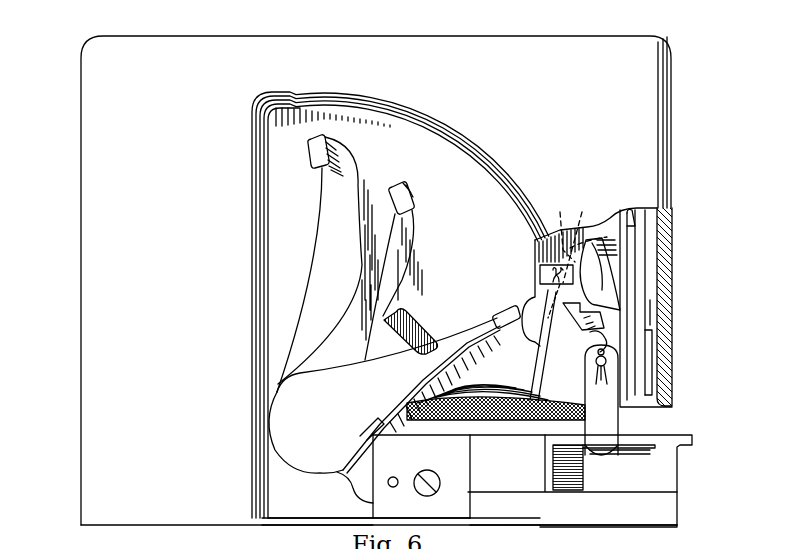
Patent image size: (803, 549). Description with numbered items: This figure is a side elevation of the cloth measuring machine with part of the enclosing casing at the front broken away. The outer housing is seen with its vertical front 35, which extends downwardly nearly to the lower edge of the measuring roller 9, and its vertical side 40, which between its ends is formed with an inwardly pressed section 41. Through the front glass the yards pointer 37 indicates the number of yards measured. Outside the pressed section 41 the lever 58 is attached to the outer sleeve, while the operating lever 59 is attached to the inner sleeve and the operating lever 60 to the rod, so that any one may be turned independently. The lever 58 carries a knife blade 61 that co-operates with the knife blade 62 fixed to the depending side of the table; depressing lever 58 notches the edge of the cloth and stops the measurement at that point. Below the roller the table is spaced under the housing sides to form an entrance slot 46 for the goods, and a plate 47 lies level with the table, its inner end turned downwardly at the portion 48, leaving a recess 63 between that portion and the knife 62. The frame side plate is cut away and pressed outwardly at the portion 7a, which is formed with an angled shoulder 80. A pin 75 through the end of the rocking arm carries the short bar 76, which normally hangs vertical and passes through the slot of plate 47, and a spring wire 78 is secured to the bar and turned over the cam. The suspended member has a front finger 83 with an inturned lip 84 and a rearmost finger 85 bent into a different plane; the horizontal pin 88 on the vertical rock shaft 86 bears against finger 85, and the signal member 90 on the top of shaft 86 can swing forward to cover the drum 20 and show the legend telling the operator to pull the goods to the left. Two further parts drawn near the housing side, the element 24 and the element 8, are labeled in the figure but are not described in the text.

The side 40 is at (100, 388).
The inwardly pressed section 41 is at (420, 158).
The lever 58 is at (328, 245).
The operating lever 59 is at (387, 262).
The operating lever 60 is at (450, 347).
The knife blade 61 is at (392, 417).
The knife blade 62 is at (447, 452).
The measuring roller 9 is at (488, 400).
The vertical rock shaft 86 is at (545, 275).
The rearmost finger 85 is at (574, 226).
The inturned lip 84 is at (579, 241).
The horizontal pin 88 is at (572, 316).
The shoulder 80 is at (585, 338).
The pin 75 is at (598, 372).
The front finger 83 is at (612, 262).
The plate 24 is at (643, 246).
The guide 8 is at (622, 312).
The yards pointer 37 is at (655, 325).
The vertical front 35 is at (672, 283).
The spring wire 78 is at (650, 325).
The short bar 76 is at (610, 423).
The entrance slot 46 is at (658, 420).
The plate 47 is at (645, 440).
The downwardly turned portion 48 is at (548, 477).
The outwardly pressed portion 7a is at (537, 418).
The drum 20 is at (322, 520).
The recess 63 is at (517, 465).
The signal member 90 is at (602, 537).